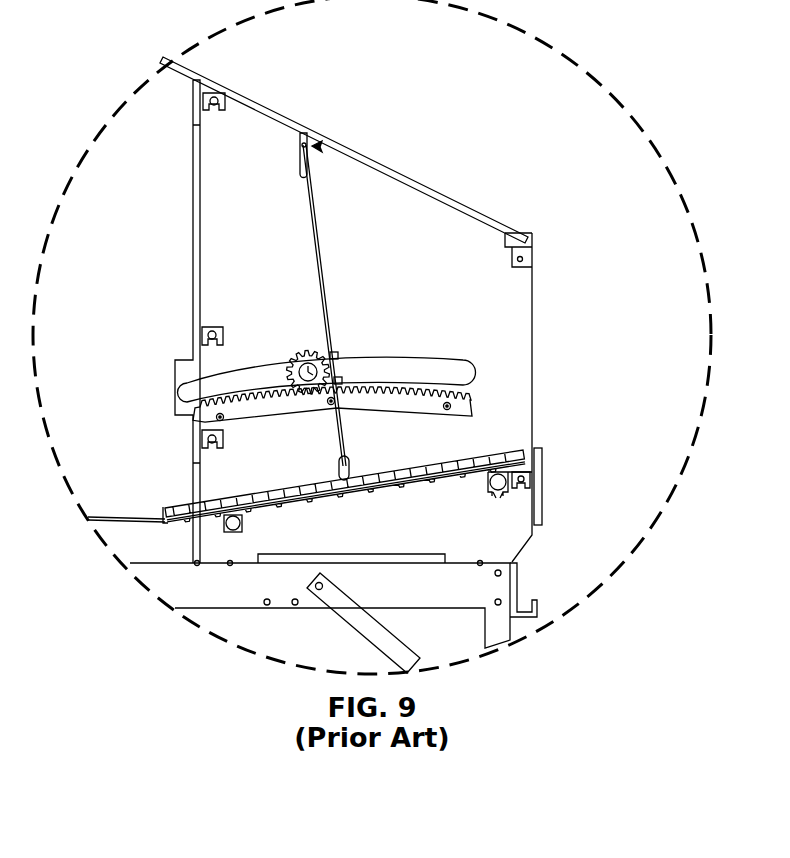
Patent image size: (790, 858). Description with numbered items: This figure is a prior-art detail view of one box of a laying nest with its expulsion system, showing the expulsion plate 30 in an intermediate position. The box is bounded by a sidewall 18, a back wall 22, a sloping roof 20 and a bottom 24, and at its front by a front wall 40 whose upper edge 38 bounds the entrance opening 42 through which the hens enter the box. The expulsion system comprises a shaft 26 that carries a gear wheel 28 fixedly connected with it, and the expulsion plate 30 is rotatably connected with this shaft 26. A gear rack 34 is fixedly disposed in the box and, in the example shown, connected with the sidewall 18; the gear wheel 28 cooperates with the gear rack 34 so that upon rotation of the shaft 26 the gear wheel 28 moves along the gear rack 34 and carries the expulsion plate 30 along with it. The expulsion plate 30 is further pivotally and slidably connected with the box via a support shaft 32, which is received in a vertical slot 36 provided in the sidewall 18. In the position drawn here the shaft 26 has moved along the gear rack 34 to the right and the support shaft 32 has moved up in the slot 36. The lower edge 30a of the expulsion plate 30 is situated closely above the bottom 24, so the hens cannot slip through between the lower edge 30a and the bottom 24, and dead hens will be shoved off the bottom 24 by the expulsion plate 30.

The sidewall 18 is at (462, 320).
The roof 20 is at (458, 197).
The back wall 22 is at (200, 195).
The bottom 24 is at (303, 483).
The shaft 26 is at (290, 360).
The gear wheel 28 is at (318, 352).
The expulsion plate 30 is at (321, 233).
The lower edge 30a is at (350, 468).
The support shaft 32 is at (320, 146).
The gear rack 34 is at (377, 399).
The vertical slot 36 is at (310, 160).
The upper edge 38 is at (538, 448).
The front wall 40 is at (535, 474).
The entrance opening 42 is at (476, 387).